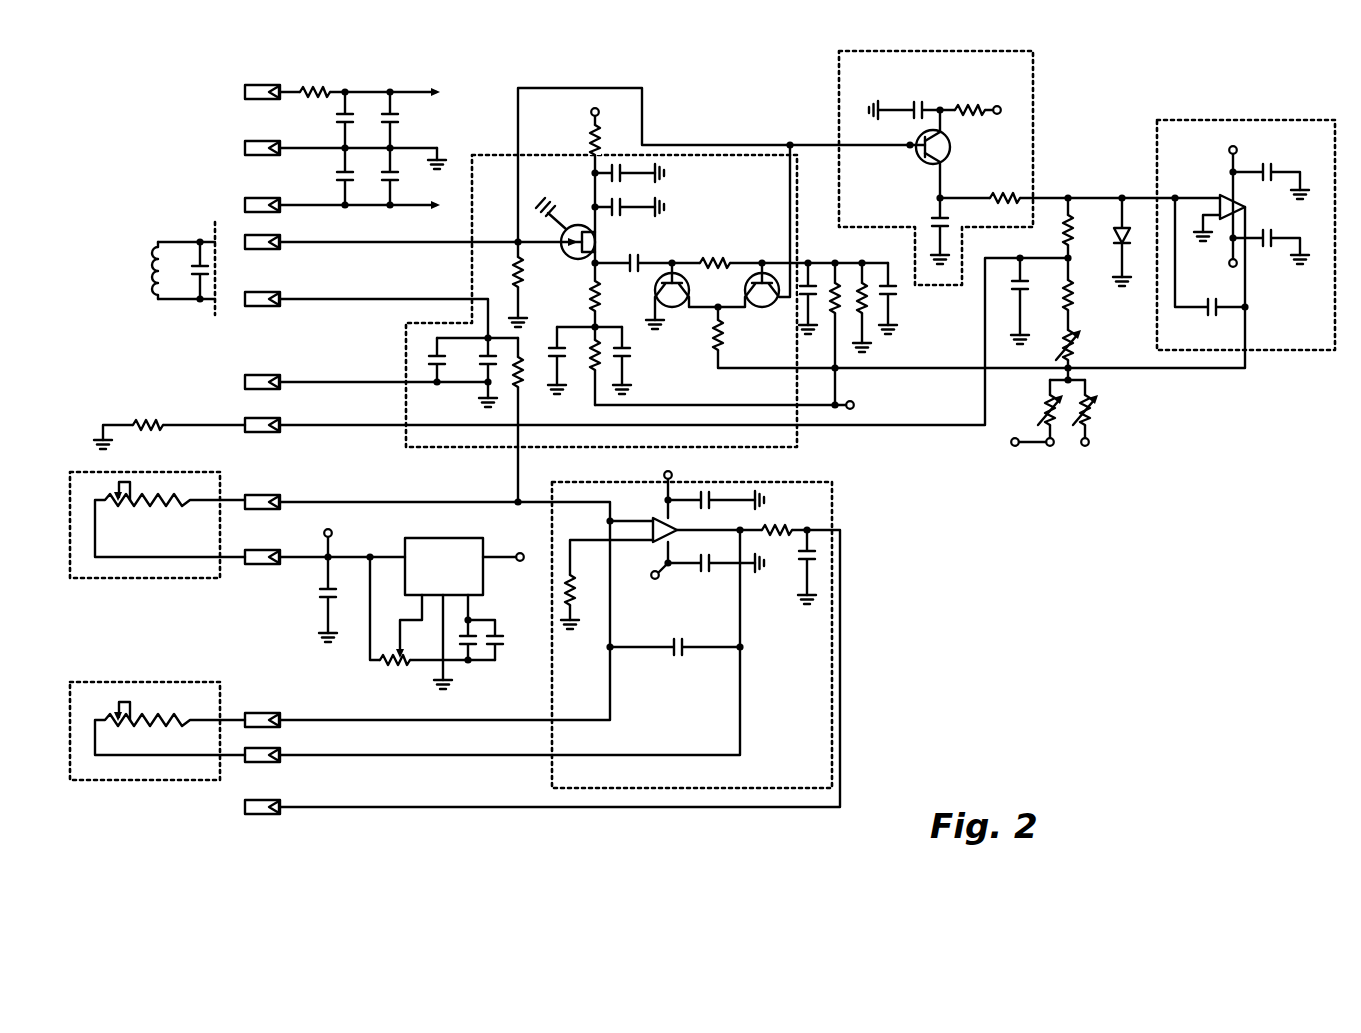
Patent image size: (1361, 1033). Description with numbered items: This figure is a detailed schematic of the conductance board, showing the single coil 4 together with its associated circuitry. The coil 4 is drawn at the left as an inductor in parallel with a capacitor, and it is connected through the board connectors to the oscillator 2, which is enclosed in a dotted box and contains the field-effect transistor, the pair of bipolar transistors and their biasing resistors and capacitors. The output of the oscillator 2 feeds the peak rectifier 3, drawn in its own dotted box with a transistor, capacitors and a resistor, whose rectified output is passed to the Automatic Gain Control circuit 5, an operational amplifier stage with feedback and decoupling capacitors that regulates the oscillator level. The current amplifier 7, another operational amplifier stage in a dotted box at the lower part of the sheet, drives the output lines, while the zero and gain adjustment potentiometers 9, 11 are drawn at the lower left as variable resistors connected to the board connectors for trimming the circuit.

The oscillator 2 is at (402, 452).
The peak rectifier 3 is at (833, 83).
The single coil 4 is at (178, 230).
The Automatic Gain Control (AGC) circuit 5 is at (1152, 121).
The current amplifier 7 is at (838, 678).
The zero adjustment potentiometer 9 is at (149, 588).
The gain adjustment potentiometer 11 is at (130, 789).